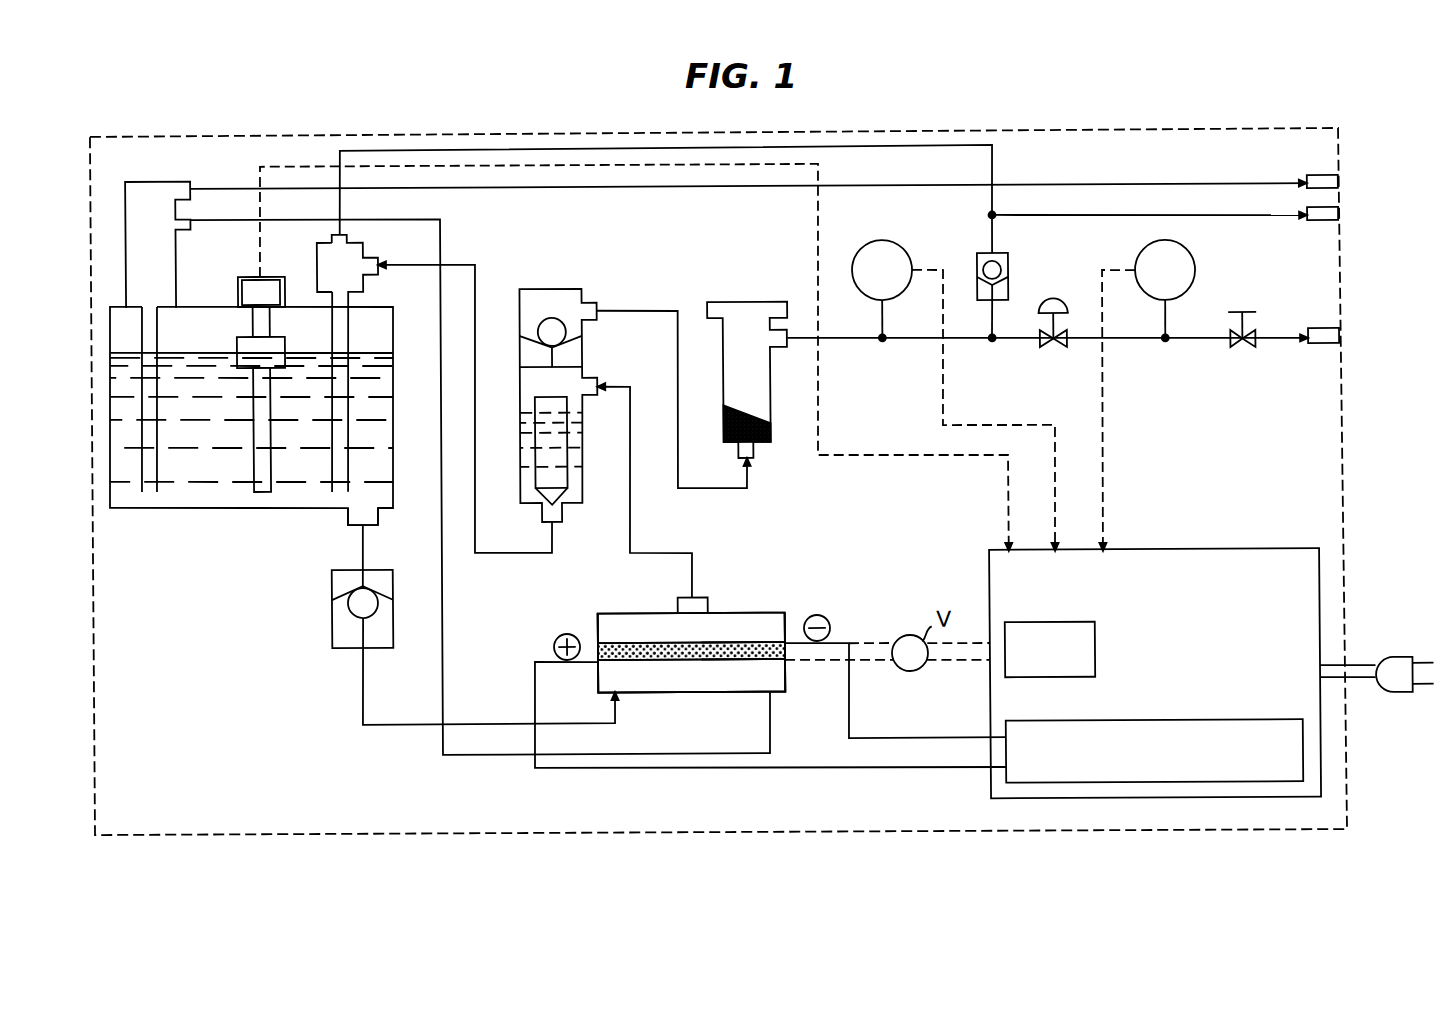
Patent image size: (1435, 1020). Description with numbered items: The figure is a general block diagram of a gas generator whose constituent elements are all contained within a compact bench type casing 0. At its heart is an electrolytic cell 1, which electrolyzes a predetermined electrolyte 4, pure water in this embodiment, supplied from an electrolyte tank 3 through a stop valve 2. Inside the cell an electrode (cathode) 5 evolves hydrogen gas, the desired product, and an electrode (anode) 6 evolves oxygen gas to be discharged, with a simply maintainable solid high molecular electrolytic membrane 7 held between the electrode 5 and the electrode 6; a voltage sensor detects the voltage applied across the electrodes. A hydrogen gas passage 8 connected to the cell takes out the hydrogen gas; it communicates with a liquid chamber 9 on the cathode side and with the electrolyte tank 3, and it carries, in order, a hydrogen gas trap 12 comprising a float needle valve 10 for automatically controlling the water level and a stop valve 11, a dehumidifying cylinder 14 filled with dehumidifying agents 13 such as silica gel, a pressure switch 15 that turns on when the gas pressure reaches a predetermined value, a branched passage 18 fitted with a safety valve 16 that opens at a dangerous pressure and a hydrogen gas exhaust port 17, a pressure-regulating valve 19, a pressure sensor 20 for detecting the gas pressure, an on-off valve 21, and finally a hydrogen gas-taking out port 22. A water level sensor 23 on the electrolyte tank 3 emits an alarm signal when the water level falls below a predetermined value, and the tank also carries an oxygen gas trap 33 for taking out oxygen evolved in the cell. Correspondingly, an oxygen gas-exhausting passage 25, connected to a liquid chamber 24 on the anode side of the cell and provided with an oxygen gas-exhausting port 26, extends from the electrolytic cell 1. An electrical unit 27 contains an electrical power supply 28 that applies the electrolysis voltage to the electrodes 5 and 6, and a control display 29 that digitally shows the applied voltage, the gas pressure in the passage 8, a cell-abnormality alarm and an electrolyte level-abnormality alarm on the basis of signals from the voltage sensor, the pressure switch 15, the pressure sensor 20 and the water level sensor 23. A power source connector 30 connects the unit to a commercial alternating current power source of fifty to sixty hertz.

The compact bench type casing 0 is at (1140, 133).
The electrolytic cell 1 is at (725, 605).
The stop valve 2 is at (331, 612).
The electrolyte tank 3 is at (304, 512).
The electrolyte 4 is at (174, 494).
The electrode (cathode) 5 is at (761, 646).
The electrode (anode) 6 is at (696, 662).
The solid high molecular electrolytic membrane 7 is at (654, 645).
The hydrogen gas passage 8 is at (862, 343).
The liquid chamber 9 is at (621, 622).
The float needle valve 10 is at (585, 470).
The stop valve 11 is at (576, 344).
The hydrogen gas trap 12 is at (564, 282).
The dehumidifying agents 13 is at (773, 432).
The dehumidifying cylinder 14 is at (766, 302).
The pressure switch 15 is at (909, 260).
The safety valve 16 is at (1010, 272).
The hydrogen gas exhaust port 17 is at (1322, 226).
The branched passage 18 is at (1086, 218).
The pressure-regulating valve 19 is at (1063, 347).
The pressure sensor 20 is at (1195, 261).
The on-off valve 21 is at (1240, 348).
The hydrogen gas-taking out port 22 is at (1320, 348).
The water level sensor 23 is at (250, 292).
The liquid chamber 24 is at (784, 680).
The oxygen gas-exhausting passage 25 is at (730, 188).
The oxygen gas-exhausting port 26 is at (1317, 178).
The electrical unit 27 is at (1238, 552).
The electrical power supply 28 is at (1273, 723).
The control display 29 is at (1098, 632).
The power source connector 30 is at (1393, 664).
The oxygen gas trap 33 is at (180, 178).